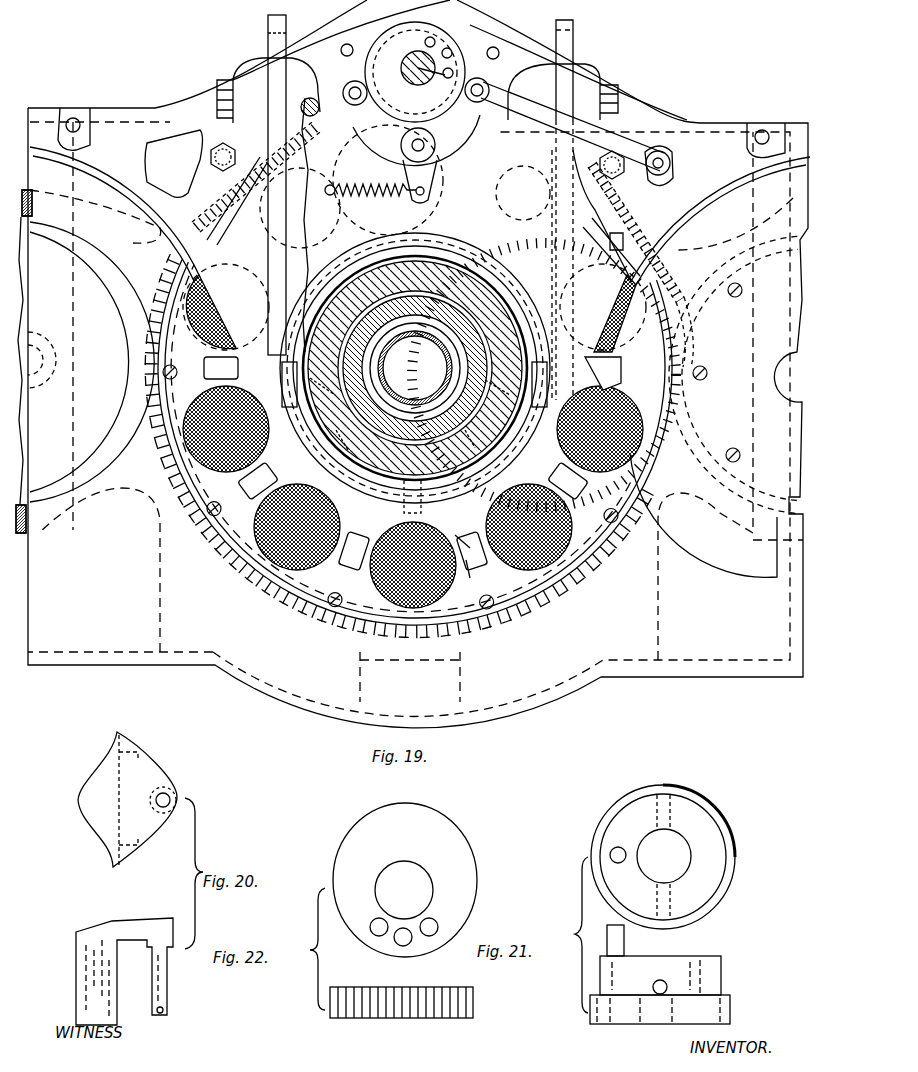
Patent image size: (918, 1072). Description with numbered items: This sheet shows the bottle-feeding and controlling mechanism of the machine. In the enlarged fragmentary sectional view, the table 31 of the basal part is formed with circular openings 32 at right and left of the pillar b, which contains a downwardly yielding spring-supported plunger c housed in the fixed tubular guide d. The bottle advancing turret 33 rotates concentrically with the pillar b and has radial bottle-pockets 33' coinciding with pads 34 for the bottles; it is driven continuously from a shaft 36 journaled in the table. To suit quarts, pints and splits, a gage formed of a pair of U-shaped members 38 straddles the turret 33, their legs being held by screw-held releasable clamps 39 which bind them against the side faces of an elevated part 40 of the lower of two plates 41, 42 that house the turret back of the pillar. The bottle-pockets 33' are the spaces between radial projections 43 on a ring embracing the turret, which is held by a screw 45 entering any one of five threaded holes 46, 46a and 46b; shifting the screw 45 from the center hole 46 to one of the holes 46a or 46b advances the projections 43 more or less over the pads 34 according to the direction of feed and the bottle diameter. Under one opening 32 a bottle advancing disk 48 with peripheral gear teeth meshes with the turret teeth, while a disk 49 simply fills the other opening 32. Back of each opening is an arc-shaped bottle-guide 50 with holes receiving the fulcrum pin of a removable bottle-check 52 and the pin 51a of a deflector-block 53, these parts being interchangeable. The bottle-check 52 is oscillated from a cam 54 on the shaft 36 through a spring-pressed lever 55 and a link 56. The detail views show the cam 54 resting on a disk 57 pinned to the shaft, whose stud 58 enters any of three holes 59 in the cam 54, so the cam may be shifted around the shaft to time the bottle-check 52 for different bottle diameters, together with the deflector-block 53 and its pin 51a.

In FIG. 19, the table 31 is at (412, 364).
In FIG. 19, the circular openings 32 is at (80, 488).
In FIG. 19, the bottle advancing turret 33 is at (408, 449).
In FIG. 19, the bottle-pockets 33' is at (577, 417).
In FIG. 19, the pads 34 is at (413, 497).
In FIG. 19, the shaft 36 is at (450, 62).
In FIG. 19, the U-shaped members 38 is at (396, 464).
In FIG. 19, the clamps 39 is at (262, 68).
In FIG. 19, the elevated part 40 is at (265, 212).
In FIG. 19, the plate 41 is at (226, 307).
In FIG. 19, the plate 42 is at (345, 215).
In FIG. 19, the radial projections 43 is at (466, 578).
In FIG. 19, the screw 45 is at (461, 541).
In FIG. 19, the threaded hole 46 is at (413, 478).
In FIG. 19, the threaded holes 46a is at (405, 442).
In FIG. 19, the threaded holes 46b is at (409, 388).
In FIG. 19, the bottle advancing disk 48 is at (710, 560).
In FIG. 19, the disk 49 is at (91, 362).
In FIG. 19, the bottle-guide 50 is at (118, 168).
In FIG. 19, the bottle-check 52 is at (705, 203).
In FIG. 20, the deflector-block 53 is at (136, 862).
In FIG. 20, the pin 51a is at (168, 985).
In FIG. 19, the cam 54 is at (372, 58).
In FIG. 22, the cam 54 is at (430, 936).
In FIG. 19, the spring-pressed lever 55 is at (452, 150).
In FIG. 19, the link 56 is at (632, 145).
In FIG. 21, the disk 57 is at (700, 965).
In FIG. 21, the stud 58 is at (625, 958).
In FIG. 19, the holes 59 is at (410, 60).
In FIG. 22, the holes 59 is at (380, 936).
In FIG. 19, the pillar b is at (520, 300).
In FIG. 19, the plunger c is at (440, 426).
In FIG. 19, the tubular guide d is at (388, 368).